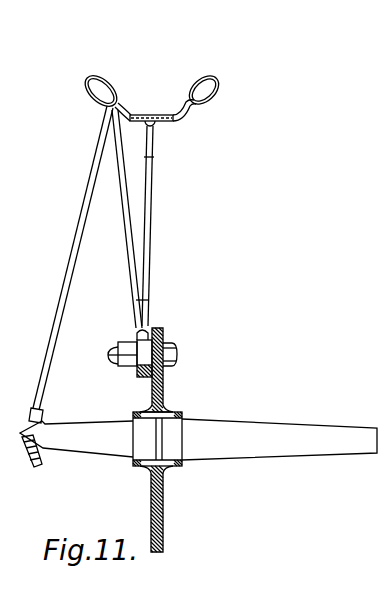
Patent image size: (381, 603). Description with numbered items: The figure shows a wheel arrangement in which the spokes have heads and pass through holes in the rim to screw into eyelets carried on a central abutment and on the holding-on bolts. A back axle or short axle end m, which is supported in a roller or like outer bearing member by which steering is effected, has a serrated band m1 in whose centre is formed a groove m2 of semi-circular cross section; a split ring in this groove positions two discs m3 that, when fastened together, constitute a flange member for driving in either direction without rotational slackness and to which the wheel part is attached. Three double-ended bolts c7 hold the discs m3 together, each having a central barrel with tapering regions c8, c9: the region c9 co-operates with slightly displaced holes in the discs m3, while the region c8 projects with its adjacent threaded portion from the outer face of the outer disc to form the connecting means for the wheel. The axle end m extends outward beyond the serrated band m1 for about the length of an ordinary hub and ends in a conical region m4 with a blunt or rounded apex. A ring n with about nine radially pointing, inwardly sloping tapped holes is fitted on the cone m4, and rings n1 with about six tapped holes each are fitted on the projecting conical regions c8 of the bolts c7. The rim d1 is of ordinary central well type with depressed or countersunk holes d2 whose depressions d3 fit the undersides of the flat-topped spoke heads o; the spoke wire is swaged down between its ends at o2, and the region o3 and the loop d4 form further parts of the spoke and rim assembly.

The head o is at (130, 112).
The swaged region o2 is at (128, 207).
The rod foot o3 is at (137, 333).
The rim d1 is at (141, 119).
The depressed holes d2 is at (114, 106).
The depressions d3 is at (137, 113).
The left wire loop d4 is at (99, 99).
The bolts c7 is at (117, 357).
The tapering region c8 is at (149, 370).
The tapering region c9 is at (175, 361).
The ring n is at (42, 414).
The rings n1 is at (141, 372).
The axle end m is at (198, 439).
The serrated band m1 is at (168, 450).
The groove m2 is at (162, 442).
The discs m3 is at (160, 516).
The conical region m4 is at (40, 440).